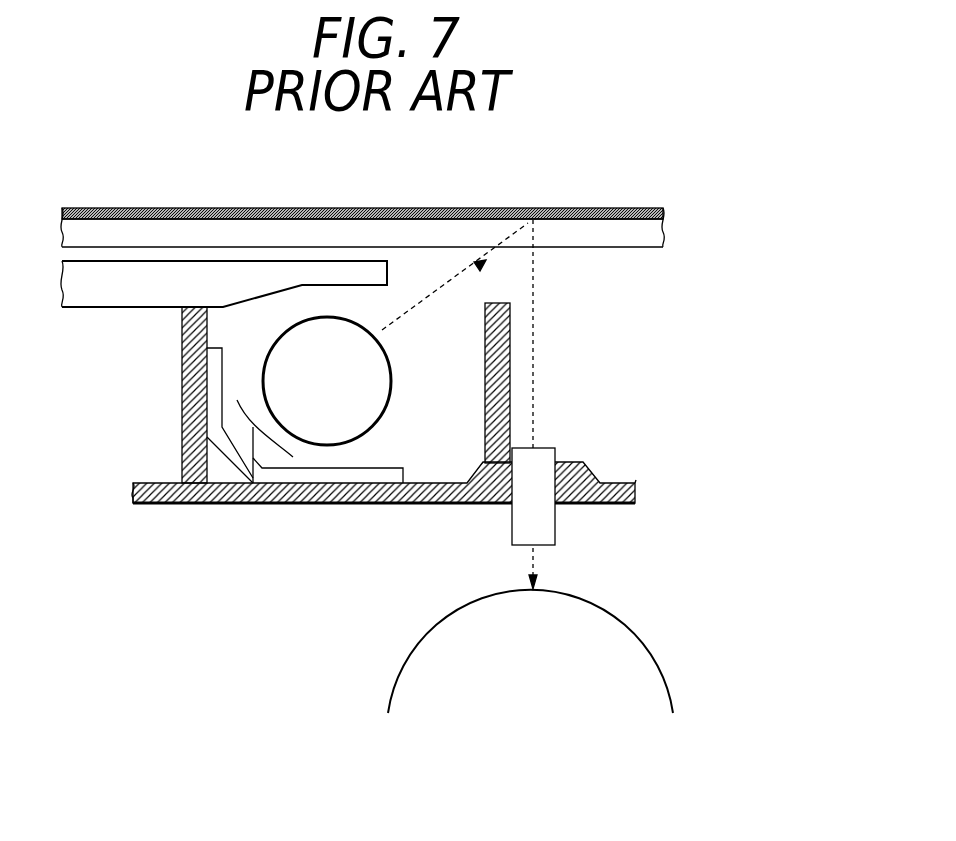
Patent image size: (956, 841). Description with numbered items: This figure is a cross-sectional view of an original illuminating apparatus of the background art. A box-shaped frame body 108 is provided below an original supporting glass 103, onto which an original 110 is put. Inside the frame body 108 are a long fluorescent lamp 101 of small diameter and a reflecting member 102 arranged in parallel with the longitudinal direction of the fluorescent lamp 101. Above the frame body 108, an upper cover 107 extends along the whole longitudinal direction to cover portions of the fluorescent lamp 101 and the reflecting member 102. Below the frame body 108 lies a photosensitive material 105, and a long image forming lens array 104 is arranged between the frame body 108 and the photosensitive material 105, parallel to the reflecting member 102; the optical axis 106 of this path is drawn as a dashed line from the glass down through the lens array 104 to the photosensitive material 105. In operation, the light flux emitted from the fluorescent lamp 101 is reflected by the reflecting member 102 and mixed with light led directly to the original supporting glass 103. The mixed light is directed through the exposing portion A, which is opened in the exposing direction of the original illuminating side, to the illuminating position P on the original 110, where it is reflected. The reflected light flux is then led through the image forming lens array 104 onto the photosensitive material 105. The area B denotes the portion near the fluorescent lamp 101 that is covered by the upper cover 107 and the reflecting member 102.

The fluorescent lamp 101 is at (362, 407).
The reflecting member 102 is at (300, 475).
The original supporting glass 103 is at (580, 238).
The image forming lens array 104 is at (543, 458).
The photosensitive material 105 is at (615, 612).
The optical axis 106 is at (535, 380).
The upper cover 107 is at (118, 293).
The frame body 108 is at (155, 503).
The original 110 is at (617, 215).
The illuminating position P is at (538, 212).
The exposing portion A is at (373, 302).
The covered area B is at (253, 503).